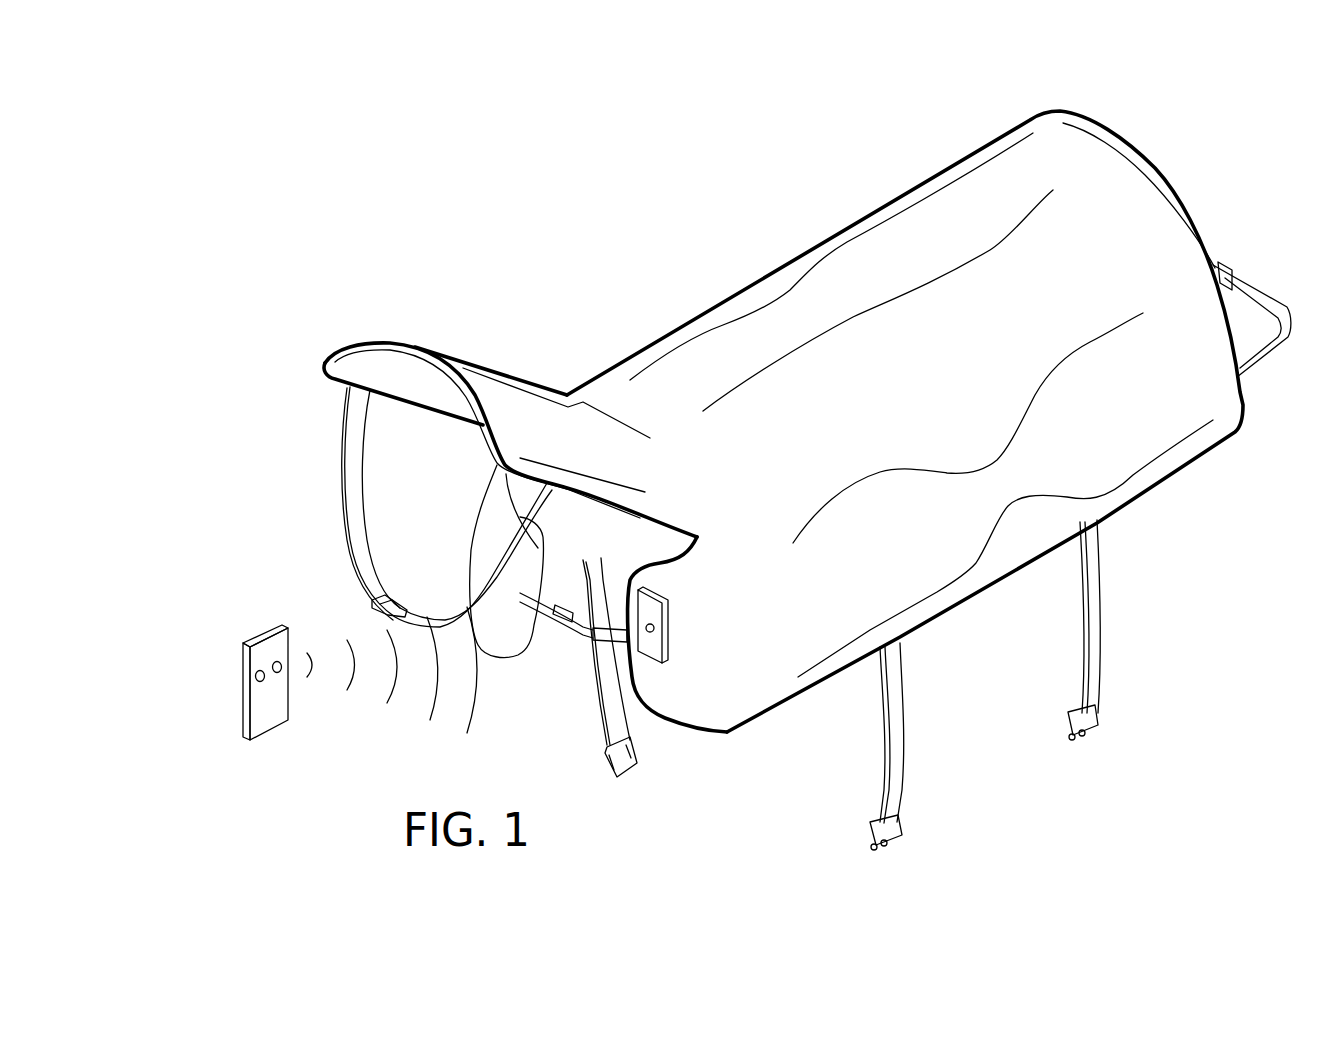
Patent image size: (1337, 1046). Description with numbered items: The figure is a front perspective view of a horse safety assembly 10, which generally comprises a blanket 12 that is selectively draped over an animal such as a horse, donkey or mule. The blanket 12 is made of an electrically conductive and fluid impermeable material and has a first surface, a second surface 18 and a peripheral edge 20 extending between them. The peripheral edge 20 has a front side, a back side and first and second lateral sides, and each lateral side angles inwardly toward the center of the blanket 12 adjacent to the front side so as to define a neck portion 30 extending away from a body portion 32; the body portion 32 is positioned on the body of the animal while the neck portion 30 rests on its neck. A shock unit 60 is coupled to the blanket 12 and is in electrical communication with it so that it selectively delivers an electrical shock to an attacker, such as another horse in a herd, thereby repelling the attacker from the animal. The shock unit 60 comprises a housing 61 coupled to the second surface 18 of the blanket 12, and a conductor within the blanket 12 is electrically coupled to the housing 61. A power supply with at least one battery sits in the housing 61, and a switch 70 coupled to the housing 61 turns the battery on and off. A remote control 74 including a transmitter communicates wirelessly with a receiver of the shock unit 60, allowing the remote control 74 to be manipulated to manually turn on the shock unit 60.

The horse safety assembly 10 is at (710, 216).
The blanket 12 is at (981, 143).
The second surface 18 is at (845, 270).
The body portion 32 is at (693, 350).
The neck portion 30 is at (505, 372).
The peripheral edge 20 is at (977, 593).
The shock unit 60 is at (688, 680).
The housing 61 is at (640, 657).
The switch 70 is at (648, 630).
The remote control 74 is at (253, 640).